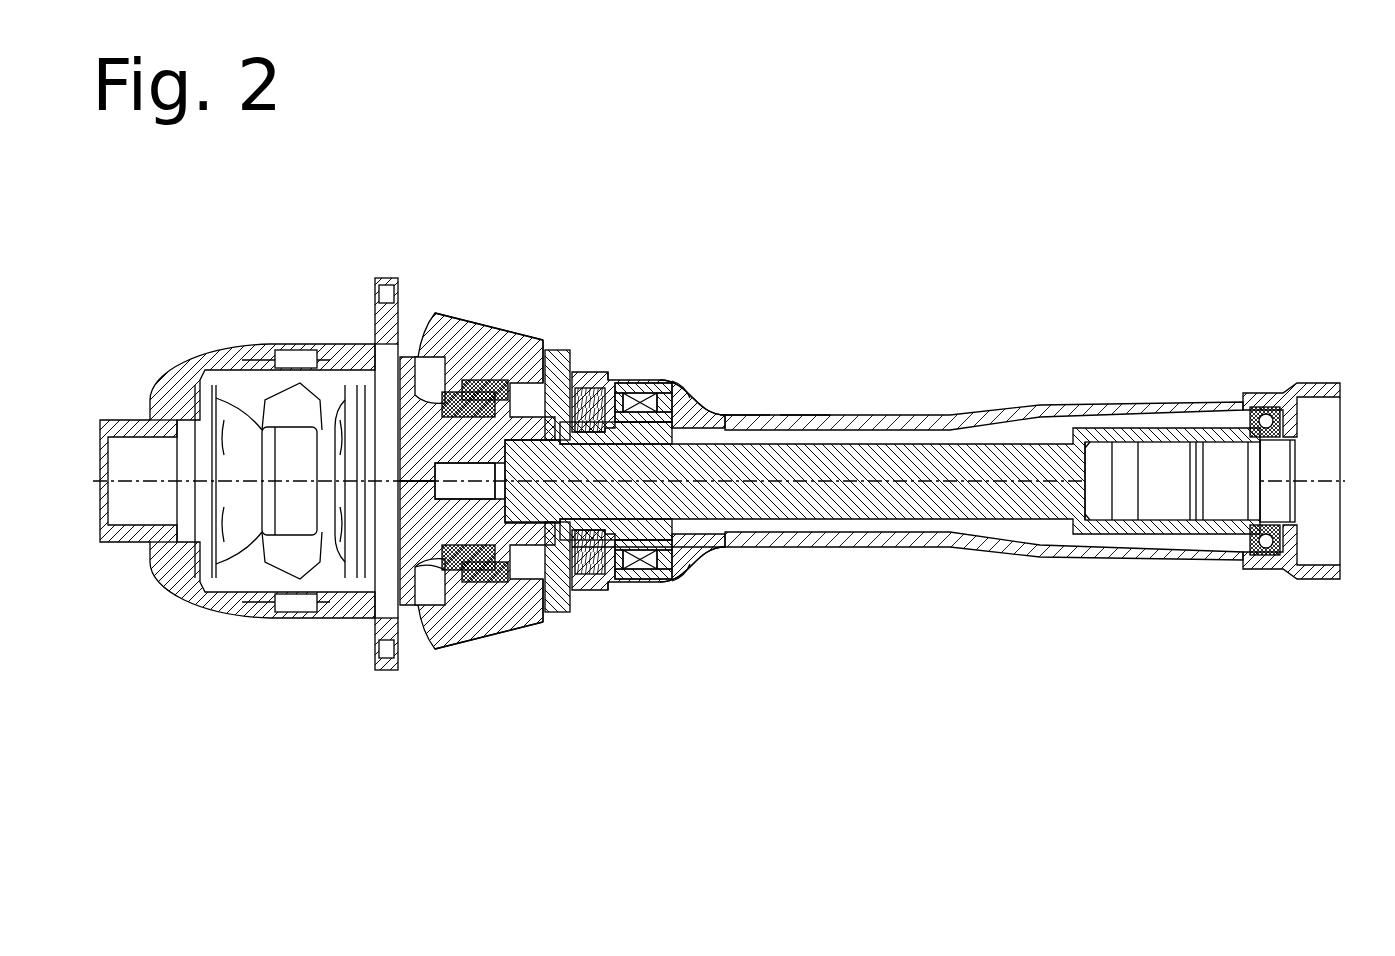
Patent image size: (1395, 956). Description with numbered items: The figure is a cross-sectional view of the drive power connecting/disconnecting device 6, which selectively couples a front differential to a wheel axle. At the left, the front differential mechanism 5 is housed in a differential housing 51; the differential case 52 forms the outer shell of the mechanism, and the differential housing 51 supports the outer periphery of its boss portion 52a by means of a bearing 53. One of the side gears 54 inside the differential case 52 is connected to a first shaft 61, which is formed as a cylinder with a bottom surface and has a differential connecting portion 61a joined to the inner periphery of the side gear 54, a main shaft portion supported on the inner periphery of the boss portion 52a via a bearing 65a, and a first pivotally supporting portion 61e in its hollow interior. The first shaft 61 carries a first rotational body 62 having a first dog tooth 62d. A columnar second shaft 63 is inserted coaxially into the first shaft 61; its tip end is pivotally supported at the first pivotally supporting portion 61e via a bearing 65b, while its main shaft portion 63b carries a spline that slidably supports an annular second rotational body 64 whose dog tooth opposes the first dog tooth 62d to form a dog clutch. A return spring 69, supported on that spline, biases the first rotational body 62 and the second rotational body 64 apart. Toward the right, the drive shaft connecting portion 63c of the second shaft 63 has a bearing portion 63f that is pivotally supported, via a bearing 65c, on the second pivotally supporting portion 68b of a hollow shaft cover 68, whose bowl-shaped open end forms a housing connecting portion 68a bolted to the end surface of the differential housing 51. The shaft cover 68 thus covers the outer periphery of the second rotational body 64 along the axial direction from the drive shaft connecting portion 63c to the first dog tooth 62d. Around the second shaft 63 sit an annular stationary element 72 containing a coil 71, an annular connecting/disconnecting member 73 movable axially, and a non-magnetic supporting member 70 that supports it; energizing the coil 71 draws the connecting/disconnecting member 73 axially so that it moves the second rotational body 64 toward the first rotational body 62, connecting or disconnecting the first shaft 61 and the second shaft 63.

The front differential mechanism 5 is at (433, 311).
The drive power connecting/disconnecting device 6 is at (626, 360).
The differential housing 51 is at (533, 335).
The differential case 52 is at (372, 298).
The boss portion 52a is at (320, 620).
The bearing 53 is at (470, 365).
The side gear 54 is at (320, 350).
The first shaft 61 is at (470, 590).
The differential connecting portion 61a is at (421, 595).
The first pivotally supporting portion 61e is at (538, 600).
The first rotational body 62 is at (582, 590).
The first dog tooth 62d is at (598, 372).
The second shaft 63 is at (848, 480).
The main shaft portion 63b is at (790, 415).
The drive shaft connecting portion 63c is at (1245, 495).
The bearing portion 63f is at (1256, 545).
The second rotational body 64 is at (634, 382).
The bearing 65a is at (495, 378).
The bearing 65b is at (507, 585).
The bearing 65c is at (1265, 405).
The shaft cover 68 is at (998, 548).
The housing connecting portion 68a is at (550, 600).
The second pivotally supporting portion 68b is at (1246, 395).
The return spring 69 is at (553, 350).
The supporting member 70 is at (690, 575).
The coil 71 is at (645, 583).
The stationary element 72 is at (697, 383).
The connecting/disconnecting member 73 is at (747, 413).